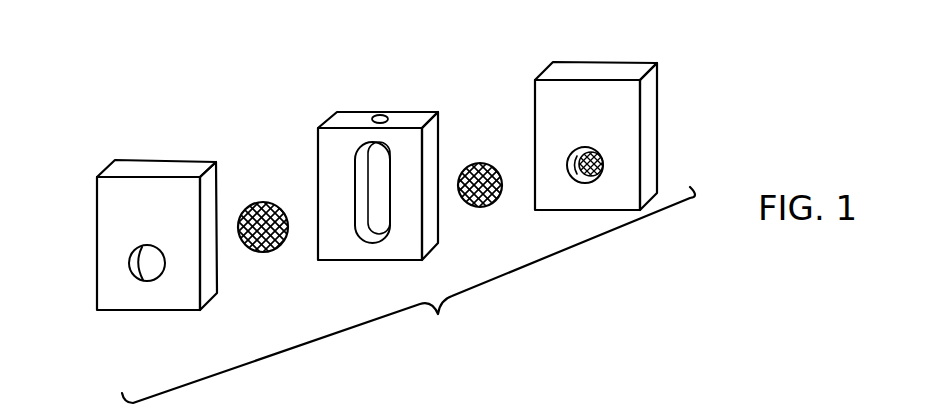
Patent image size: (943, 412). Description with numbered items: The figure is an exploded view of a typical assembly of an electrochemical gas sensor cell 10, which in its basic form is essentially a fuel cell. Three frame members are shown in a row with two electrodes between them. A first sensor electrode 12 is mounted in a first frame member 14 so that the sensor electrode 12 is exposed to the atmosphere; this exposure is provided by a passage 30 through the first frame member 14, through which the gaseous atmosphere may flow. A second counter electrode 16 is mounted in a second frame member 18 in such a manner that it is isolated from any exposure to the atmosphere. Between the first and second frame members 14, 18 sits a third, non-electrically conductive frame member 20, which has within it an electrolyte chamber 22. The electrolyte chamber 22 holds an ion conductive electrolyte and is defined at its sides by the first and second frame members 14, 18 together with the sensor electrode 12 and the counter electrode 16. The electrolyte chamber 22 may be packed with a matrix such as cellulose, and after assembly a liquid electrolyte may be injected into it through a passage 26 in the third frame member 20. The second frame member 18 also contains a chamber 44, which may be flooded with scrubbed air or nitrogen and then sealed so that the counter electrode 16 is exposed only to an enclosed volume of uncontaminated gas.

The electrochemical gas sensor cell 10 is at (542, 278).
The sensor electrode 12 is at (262, 198).
The first frame member 14 is at (137, 167).
The counter electrode 16 is at (480, 162).
The second frame member 18 is at (588, 67).
The third frame member 20 is at (338, 115).
The electrolyte chamber 22 is at (367, 230).
The passage 26 is at (397, 118).
The passage 30 is at (128, 265).
The chamber 44 is at (582, 148).